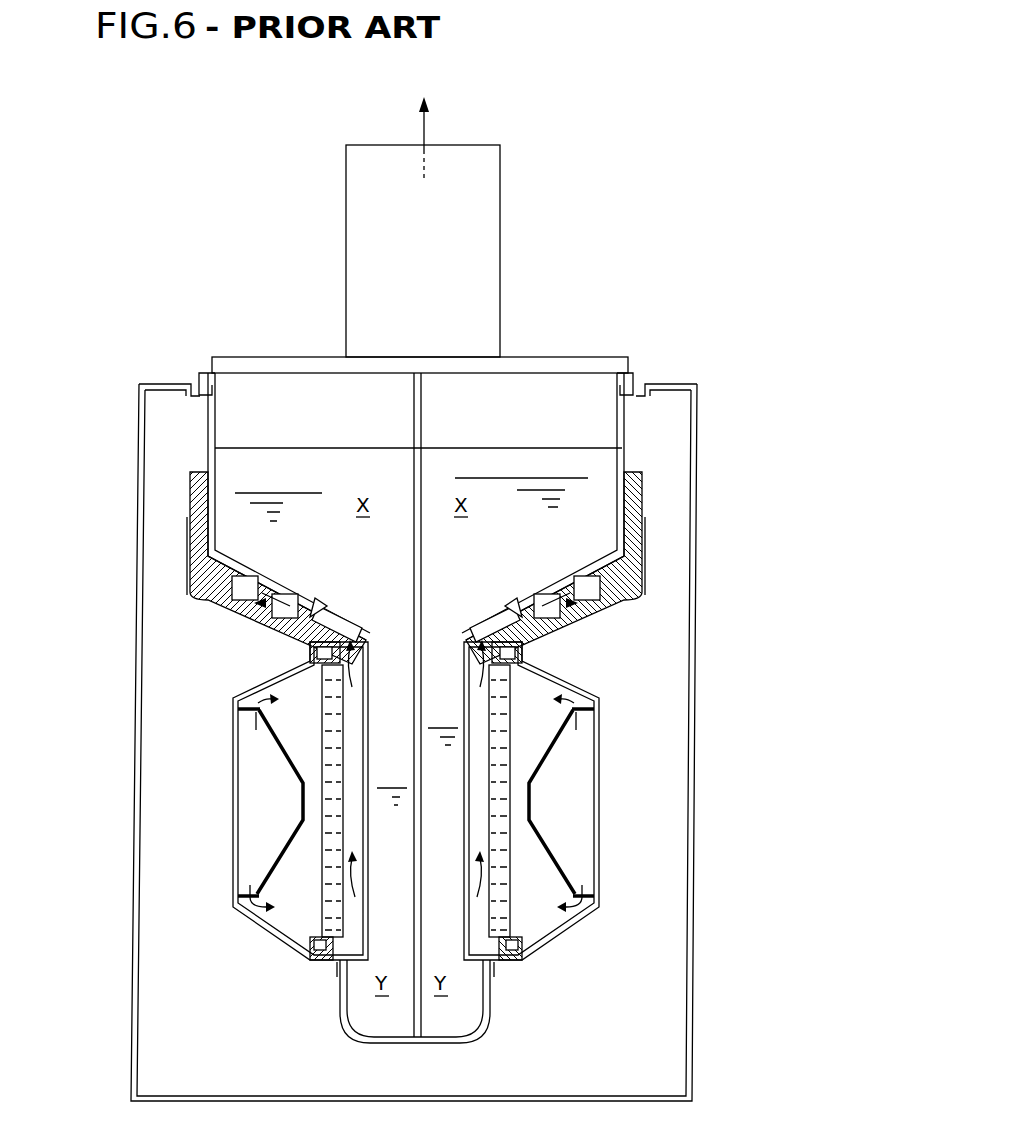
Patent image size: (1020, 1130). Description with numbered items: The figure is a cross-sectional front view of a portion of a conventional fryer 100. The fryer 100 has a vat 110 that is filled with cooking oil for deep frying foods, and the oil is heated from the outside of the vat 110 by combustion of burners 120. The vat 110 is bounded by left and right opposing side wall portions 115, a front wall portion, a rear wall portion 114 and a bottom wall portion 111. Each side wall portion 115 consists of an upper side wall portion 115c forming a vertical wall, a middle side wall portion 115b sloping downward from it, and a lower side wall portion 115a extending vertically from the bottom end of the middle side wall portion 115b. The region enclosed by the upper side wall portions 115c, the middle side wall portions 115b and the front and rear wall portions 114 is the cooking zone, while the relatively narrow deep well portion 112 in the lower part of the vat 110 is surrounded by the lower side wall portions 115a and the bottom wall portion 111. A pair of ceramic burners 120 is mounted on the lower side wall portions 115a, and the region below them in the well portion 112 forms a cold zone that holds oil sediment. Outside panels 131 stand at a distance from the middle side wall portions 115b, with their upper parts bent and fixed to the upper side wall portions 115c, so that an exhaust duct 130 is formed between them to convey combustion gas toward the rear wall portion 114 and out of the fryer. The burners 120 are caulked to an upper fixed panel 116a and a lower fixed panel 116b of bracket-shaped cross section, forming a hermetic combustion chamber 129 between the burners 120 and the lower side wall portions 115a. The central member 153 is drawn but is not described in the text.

The fryer 100 is at (316, 190).
The vat 110 is at (264, 338).
The bottom wall portion 111 is at (435, 1045).
The well portion 112 is at (466, 1010).
The rear wall portion 114 is at (514, 408).
The side wall portions 115 is at (192, 417).
The lower side wall portion 115a is at (360, 727).
The middle side wall portion 115b is at (305, 634).
The upper side wall portion 115c is at (208, 465).
The upper fixed panel 116a is at (307, 653).
The lower fixed panel 116b is at (302, 945).
The ceramic burners 120 is at (320, 873).
The combustion chamber 129 is at (352, 790).
The exhaust duct 130 is at (637, 580).
The outside panels 131 is at (213, 577).
The central pipe 153 is at (426, 540).